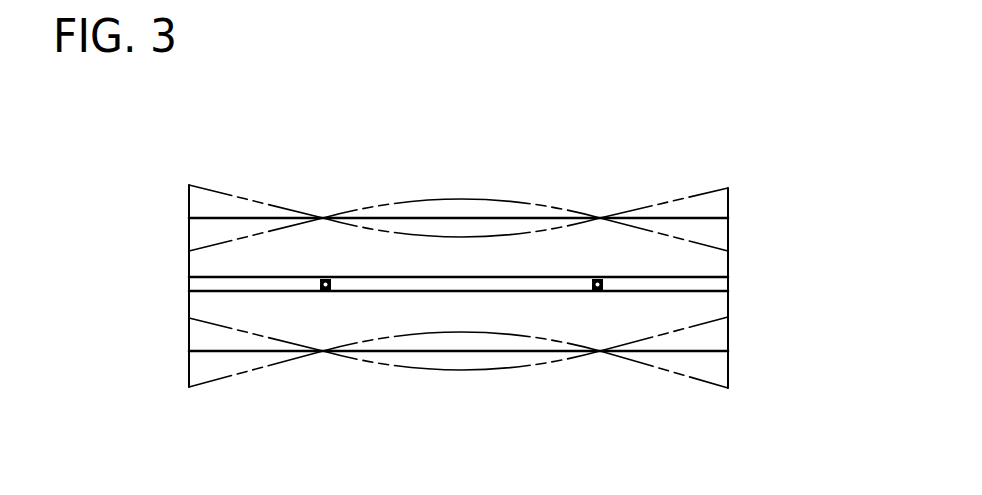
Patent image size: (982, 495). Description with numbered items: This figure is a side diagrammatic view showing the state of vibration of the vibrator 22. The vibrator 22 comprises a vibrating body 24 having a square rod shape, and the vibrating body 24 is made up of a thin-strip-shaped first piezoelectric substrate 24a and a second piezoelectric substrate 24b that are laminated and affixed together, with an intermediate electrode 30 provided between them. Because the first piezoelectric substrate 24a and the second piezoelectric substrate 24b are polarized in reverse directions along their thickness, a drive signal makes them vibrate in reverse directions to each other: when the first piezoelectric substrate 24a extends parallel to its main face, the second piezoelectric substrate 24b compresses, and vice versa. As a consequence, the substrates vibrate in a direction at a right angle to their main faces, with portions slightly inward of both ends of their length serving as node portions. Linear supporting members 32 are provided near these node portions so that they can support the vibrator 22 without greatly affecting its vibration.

The vibrator 22 is at (510, 218).
The vibrating body 24 is at (730, 234).
The first piezoelectric substrate 24a is at (717, 268).
The second piezoelectric substrate 24b is at (713, 311).
The intermediate electrode 30 is at (720, 287).
The supporting members 32 is at (328, 291).